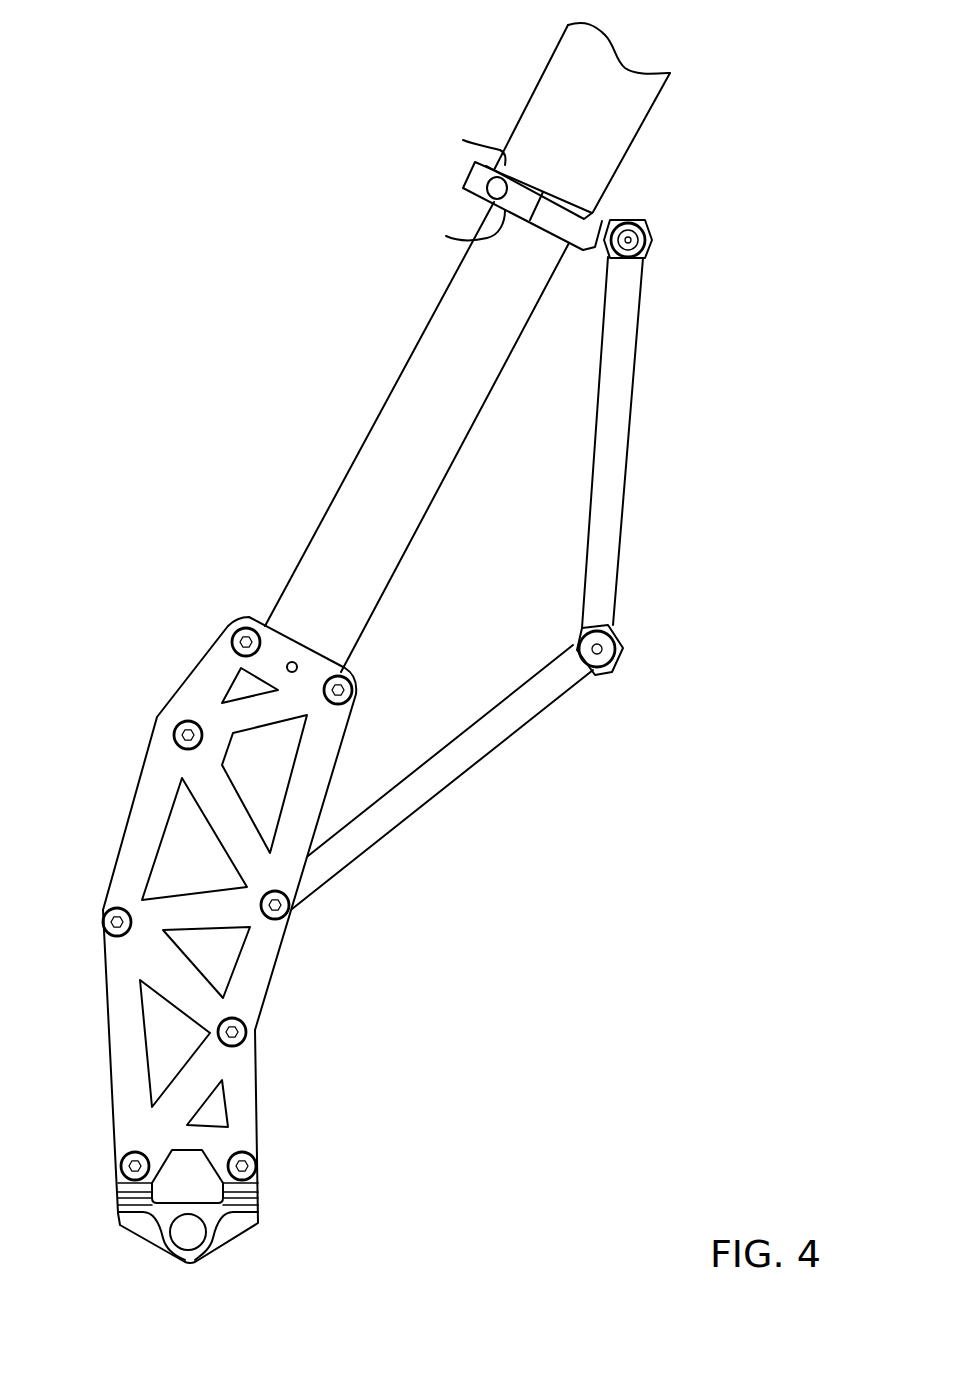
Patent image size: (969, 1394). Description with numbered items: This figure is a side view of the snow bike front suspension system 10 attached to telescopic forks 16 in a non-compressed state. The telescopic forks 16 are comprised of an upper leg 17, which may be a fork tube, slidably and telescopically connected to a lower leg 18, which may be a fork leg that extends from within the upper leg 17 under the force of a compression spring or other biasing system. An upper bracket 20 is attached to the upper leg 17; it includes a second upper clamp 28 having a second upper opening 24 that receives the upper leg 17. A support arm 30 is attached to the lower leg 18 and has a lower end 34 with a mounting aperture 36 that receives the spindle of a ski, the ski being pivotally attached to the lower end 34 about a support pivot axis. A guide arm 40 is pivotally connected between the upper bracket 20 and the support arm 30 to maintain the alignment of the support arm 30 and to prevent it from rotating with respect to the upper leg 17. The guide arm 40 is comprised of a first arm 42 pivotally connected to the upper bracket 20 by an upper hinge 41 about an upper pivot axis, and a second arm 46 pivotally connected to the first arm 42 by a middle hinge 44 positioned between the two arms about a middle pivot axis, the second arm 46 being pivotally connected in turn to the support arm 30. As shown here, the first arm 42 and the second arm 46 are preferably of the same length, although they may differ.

The snow bike front suspension system 10 is at (166, 241).
The telescopic forks 16 is at (528, 89).
The upper leg 17 is at (632, 146).
The lower leg 18 is at (402, 363).
The upper bracket 20 is at (461, 174).
The second upper opening 24 is at (463, 140).
The second upper clamp 28 is at (446, 236).
The support arm 30 is at (279, 997).
The lower end 34 is at (155, 1235).
The mounting aperture 36 is at (192, 1237).
The guide arm 40 is at (631, 474).
The upper hinge 41 is at (628, 240).
The first arm 42 is at (636, 381).
The middle hinge 44 is at (597, 649).
The second arm 46 is at (507, 740).